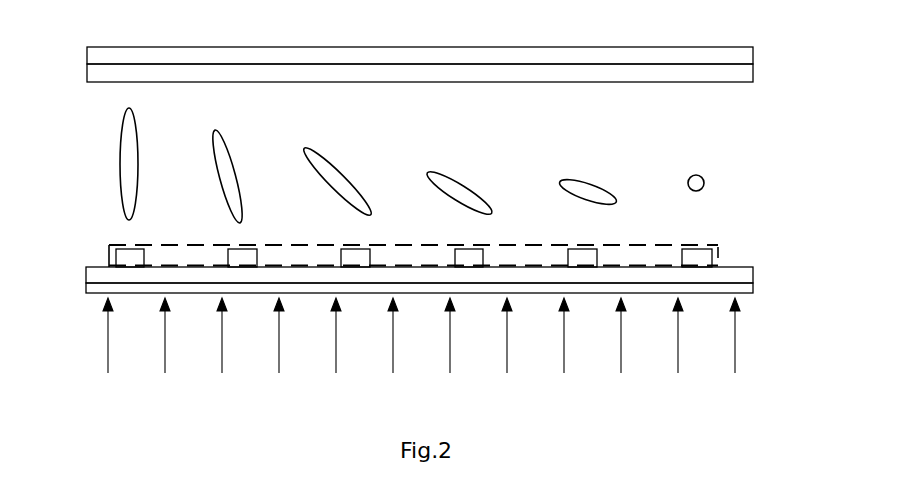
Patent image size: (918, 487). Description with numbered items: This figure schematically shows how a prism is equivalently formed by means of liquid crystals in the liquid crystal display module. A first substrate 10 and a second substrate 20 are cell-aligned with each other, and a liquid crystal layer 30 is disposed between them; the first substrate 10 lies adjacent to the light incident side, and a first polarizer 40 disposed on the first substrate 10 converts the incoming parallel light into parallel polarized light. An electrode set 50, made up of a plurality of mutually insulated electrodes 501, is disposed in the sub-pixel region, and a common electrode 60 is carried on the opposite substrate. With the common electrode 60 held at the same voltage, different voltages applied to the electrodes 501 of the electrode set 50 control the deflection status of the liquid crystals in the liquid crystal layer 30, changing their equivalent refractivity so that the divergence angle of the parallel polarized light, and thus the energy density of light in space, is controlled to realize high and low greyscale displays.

The first substrate 10 is at (727, 269).
The second substrate 20 is at (727, 53).
The liquid crystal layer 30 is at (747, 85).
The first polarizer 40 is at (727, 288).
The electrode set 50 is at (158, 253).
The electrodes 501 is at (129, 258).
The common electrode 60 is at (727, 73).